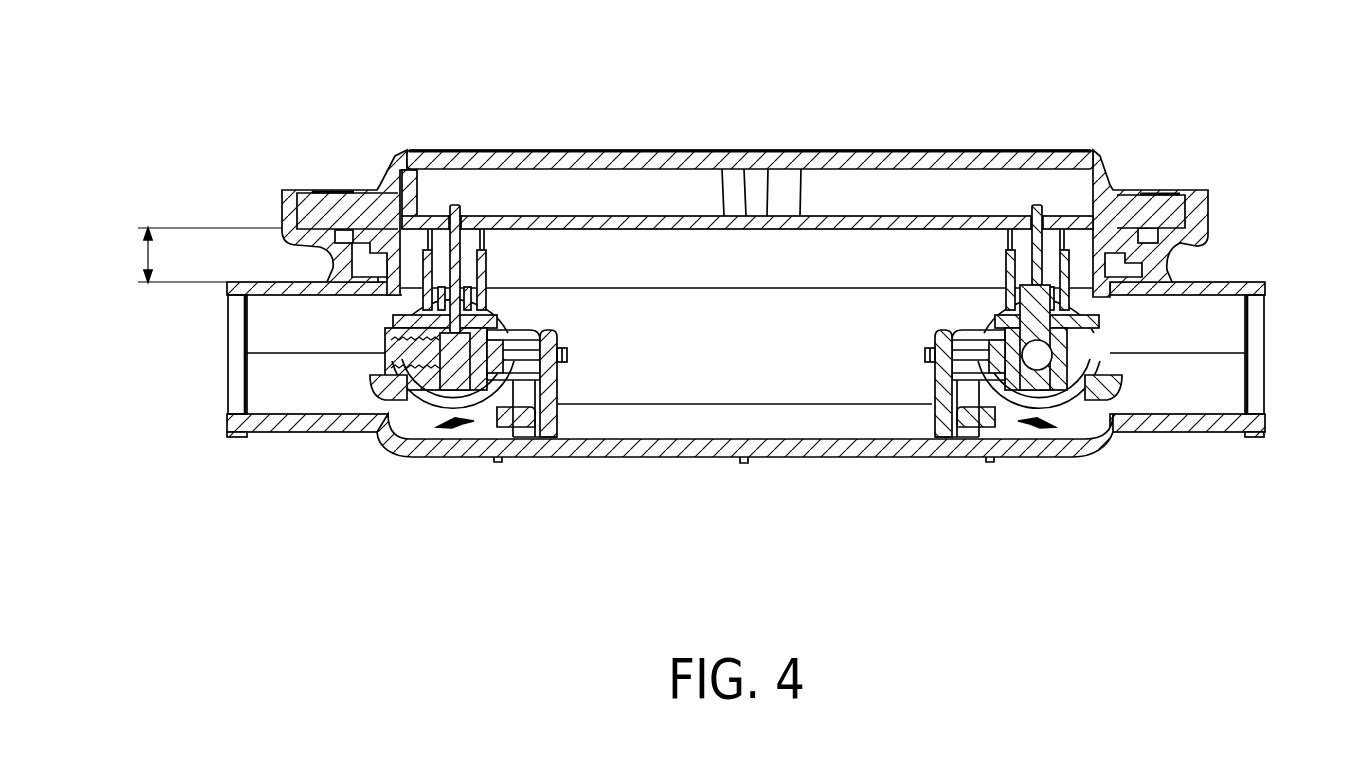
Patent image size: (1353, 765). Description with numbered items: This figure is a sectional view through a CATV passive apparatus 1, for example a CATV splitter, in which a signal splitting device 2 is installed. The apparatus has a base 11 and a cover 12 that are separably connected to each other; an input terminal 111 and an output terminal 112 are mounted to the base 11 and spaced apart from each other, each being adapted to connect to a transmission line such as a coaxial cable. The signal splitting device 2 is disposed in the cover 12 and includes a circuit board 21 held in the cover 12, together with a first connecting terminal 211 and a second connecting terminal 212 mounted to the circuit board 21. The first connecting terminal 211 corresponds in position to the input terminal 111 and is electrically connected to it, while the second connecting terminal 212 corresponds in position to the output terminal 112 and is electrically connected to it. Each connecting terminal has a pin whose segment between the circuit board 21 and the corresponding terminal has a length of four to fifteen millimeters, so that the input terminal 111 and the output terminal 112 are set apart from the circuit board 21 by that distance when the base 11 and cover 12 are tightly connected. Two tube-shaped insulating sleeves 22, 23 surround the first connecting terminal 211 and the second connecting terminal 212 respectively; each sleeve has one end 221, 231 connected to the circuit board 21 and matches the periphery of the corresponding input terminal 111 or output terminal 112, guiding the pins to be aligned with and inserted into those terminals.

The CATV passive apparatus 1 is at (1272, 252).
The base 11 is at (744, 460).
The input terminal 111 is at (442, 300).
The output terminal 112 is at (1023, 304).
The cover 12 is at (863, 150).
The signal splitting device 2 is at (668, 212).
The circuit board 21 is at (802, 215).
The first connecting terminal 211 is at (408, 228).
The second connecting terminal 212 is at (1040, 250).
The insulating sleeve 22 is at (486, 266).
The end of insulating sleeve 221 is at (413, 216).
The insulating sleeve 23 is at (1007, 268).
The end of insulating sleeve 231 is at (1137, 210).